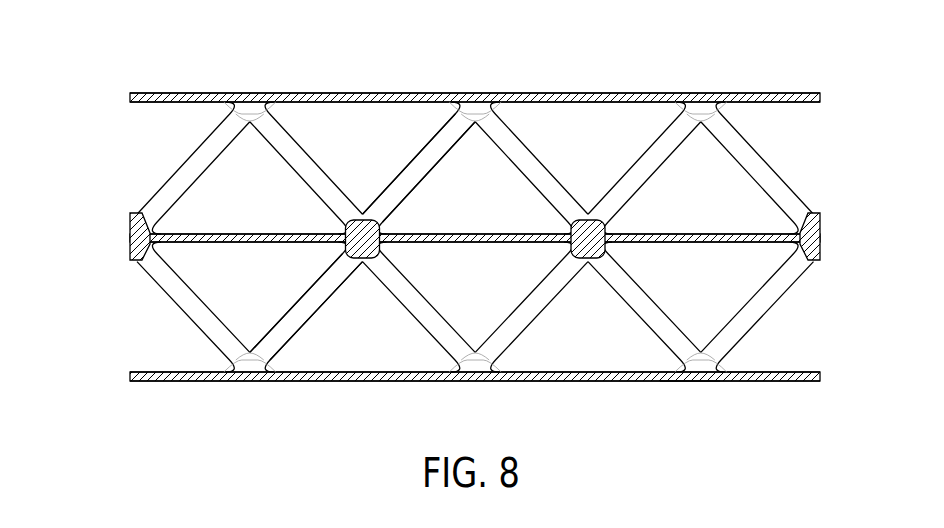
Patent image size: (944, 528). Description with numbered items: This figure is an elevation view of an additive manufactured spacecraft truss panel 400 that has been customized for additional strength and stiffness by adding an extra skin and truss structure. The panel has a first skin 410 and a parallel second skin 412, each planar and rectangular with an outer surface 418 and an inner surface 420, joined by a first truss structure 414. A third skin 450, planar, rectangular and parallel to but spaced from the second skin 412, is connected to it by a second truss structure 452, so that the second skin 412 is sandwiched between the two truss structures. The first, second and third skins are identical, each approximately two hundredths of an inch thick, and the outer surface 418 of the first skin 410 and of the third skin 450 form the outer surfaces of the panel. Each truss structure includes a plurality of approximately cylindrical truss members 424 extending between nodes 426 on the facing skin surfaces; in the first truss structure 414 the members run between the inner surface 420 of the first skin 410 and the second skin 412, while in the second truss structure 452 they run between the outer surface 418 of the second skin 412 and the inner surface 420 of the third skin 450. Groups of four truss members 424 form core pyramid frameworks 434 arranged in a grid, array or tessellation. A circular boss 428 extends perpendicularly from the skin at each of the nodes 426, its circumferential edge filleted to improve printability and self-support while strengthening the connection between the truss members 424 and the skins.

The truss panel 400 is at (459, 245).
The first skin 410 is at (803, 384).
The second skin 412 is at (805, 237).
The first truss structure 414 is at (802, 311).
The outer surface 418 is at (158, 93).
The inner surface 420 is at (158, 102).
The truss members 424 is at (512, 237).
The nodes 426 is at (683, 382).
The circular bosses 428 is at (703, 107).
The core pyramid frameworks 434 is at (416, 140).
The third skin 450 is at (803, 93).
The second truss structure 452 is at (796, 150).